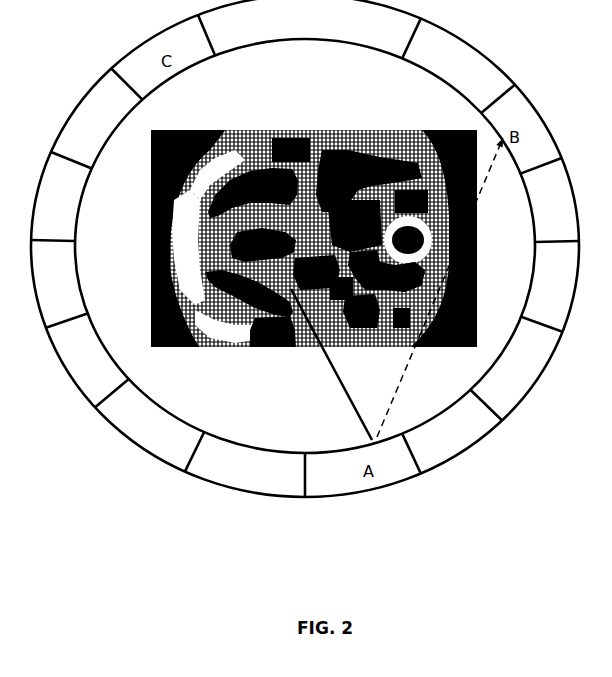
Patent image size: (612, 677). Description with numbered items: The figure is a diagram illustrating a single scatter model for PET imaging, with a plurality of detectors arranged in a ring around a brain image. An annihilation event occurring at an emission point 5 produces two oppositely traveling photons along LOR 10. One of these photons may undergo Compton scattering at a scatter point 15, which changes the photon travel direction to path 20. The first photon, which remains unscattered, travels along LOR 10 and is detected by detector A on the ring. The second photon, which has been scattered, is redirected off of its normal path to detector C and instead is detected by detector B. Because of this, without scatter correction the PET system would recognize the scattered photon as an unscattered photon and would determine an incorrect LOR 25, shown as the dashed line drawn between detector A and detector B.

The emission point 5 is at (251, 307).
The LOR 10 is at (340, 387).
The scatter point 15 is at (262, 230).
The path 20 is at (350, 206).
The incorrect LOR 25 is at (400, 390).